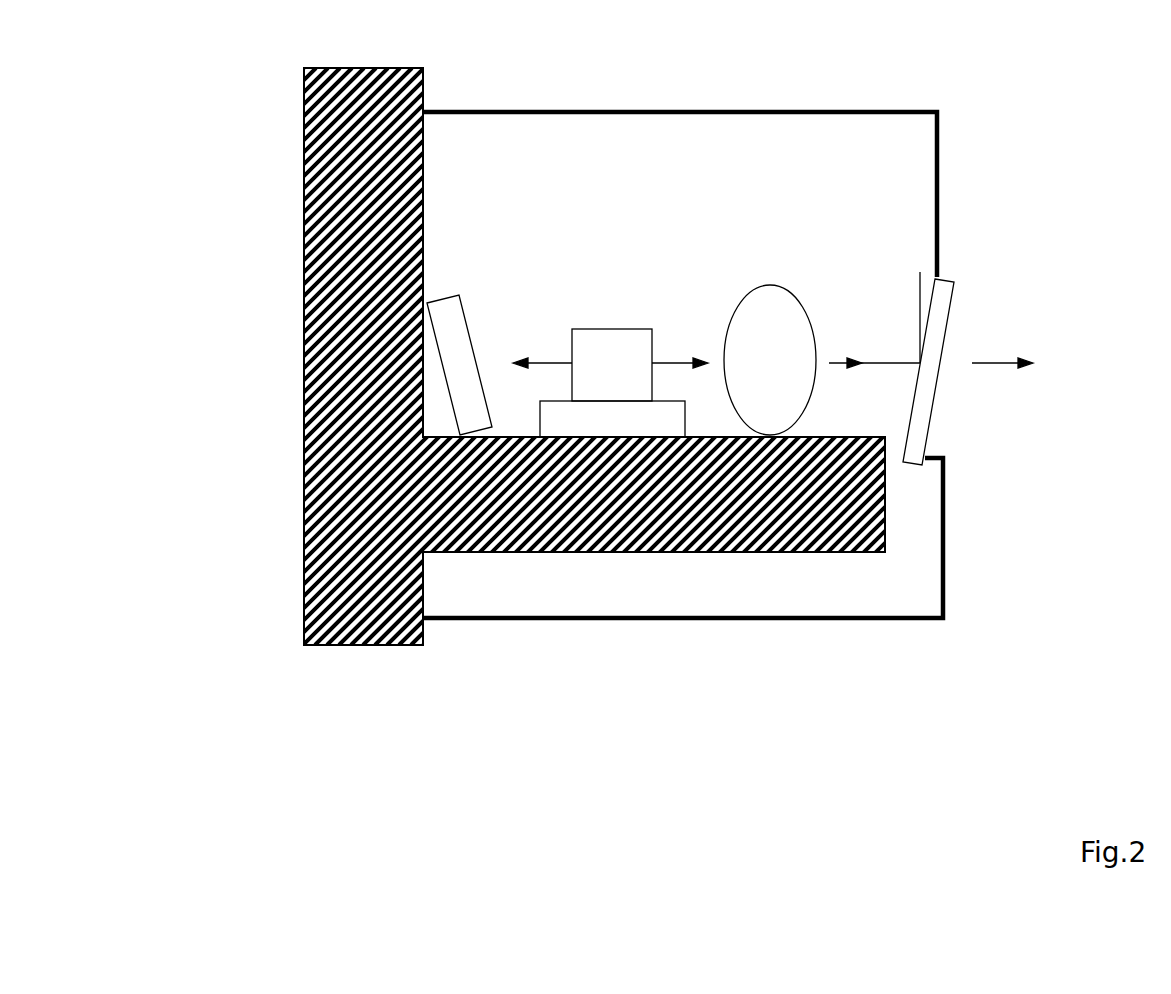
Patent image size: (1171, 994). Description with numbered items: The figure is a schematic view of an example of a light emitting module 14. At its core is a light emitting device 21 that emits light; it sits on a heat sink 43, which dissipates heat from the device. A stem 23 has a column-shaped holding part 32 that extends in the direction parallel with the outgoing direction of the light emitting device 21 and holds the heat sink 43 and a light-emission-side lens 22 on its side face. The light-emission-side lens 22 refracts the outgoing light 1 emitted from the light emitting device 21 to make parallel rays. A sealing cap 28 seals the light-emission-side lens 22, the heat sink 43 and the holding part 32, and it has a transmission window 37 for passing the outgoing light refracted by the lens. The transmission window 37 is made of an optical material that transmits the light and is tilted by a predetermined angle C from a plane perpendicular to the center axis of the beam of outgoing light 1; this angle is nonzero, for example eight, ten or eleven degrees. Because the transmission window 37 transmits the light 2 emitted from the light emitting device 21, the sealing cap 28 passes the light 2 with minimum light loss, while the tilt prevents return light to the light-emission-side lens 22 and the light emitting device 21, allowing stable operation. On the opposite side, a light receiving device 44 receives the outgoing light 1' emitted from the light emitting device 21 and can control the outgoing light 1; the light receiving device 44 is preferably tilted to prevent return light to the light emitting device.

The light emitting module 14 is at (1008, 100).
The light emitting device 21 is at (622, 329).
The light-emission-side lens 22 is at (770, 285).
The stem 23 is at (297, 585).
The sealing cap 28 is at (943, 547).
The holding part 32 is at (772, 553).
The transmission window 37 is at (954, 300).
The heat sink 43 is at (552, 401).
The light receiving device 44 is at (445, 300).
The predetermined angle C is at (932, 278).
The outgoing light 1 is at (680, 330).
The outgoing light 1' is at (542, 330).
The light 2 is at (868, 362).